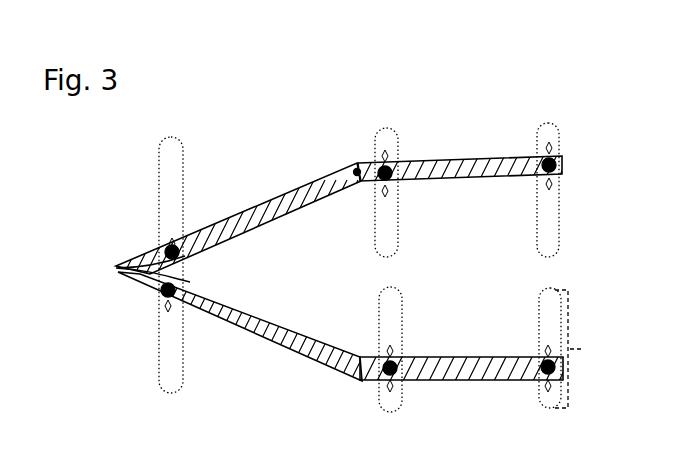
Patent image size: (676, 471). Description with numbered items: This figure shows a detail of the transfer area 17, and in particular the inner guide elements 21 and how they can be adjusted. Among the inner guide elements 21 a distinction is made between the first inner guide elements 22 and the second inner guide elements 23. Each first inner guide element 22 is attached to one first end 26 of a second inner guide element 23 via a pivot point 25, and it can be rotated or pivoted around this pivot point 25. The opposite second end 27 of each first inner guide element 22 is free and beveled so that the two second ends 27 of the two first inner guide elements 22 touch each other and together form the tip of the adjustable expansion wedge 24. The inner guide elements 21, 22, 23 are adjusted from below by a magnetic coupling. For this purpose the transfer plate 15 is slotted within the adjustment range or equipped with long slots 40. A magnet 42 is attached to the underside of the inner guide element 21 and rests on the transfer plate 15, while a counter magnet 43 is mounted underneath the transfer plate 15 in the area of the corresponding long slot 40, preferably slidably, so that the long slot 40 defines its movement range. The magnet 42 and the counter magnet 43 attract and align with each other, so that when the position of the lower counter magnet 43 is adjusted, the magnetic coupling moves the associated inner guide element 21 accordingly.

The transfer plate 15 is at (507, 266).
The transfer area 17 is at (285, 413).
The inner guide elements 21 is at (335, 201).
The first inner guide elements 22 is at (251, 201).
The second inner guide elements 23 is at (443, 173).
The adjustable expansion wedge 24 is at (225, 225).
The pivot point 25 is at (364, 176).
The first end 26 is at (357, 168).
The second end 27 is at (118, 267).
The long slots 40 is at (172, 367).
The magnet 42 is at (585, 190).
The counter magnet 43 is at (556, 164).